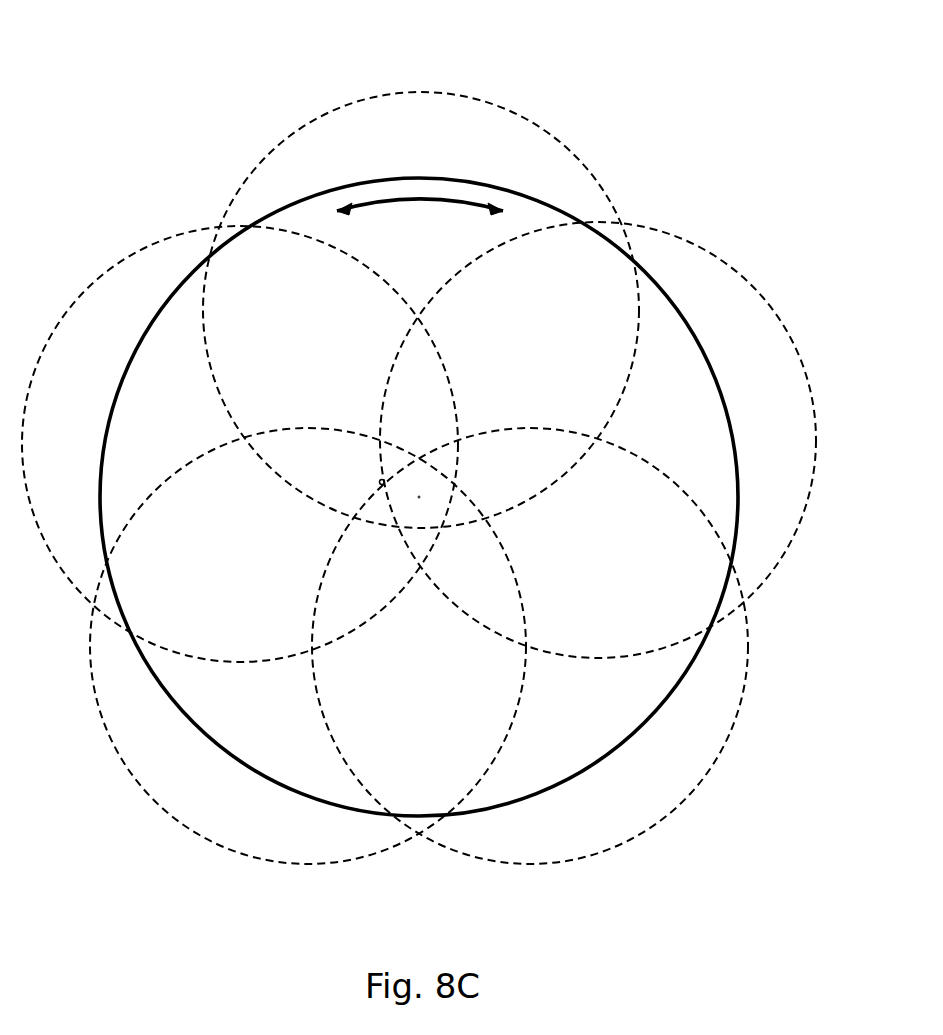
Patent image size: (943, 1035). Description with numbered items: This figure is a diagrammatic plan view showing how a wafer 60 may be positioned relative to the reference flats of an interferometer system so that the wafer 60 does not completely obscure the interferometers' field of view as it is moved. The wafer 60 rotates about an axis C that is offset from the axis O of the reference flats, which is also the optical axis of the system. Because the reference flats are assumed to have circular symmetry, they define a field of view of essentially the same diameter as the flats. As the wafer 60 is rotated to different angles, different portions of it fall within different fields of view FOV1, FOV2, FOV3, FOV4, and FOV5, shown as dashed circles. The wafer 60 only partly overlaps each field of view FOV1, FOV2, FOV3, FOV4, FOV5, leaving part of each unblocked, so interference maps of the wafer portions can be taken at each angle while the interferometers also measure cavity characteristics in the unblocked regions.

The wafer 60 is at (560, 205).
The first field of view FOV1 is at (737, 270).
The second field of view FOV2 is at (378, 92).
The third field of view FOV3 is at (153, 238).
The fourth field of view FOV4 is at (177, 823).
The fifth field of view FOV5 is at (662, 823).
The axis of rotation of wafer C is at (379, 481).
The axis of reference flats O is at (385, 482).